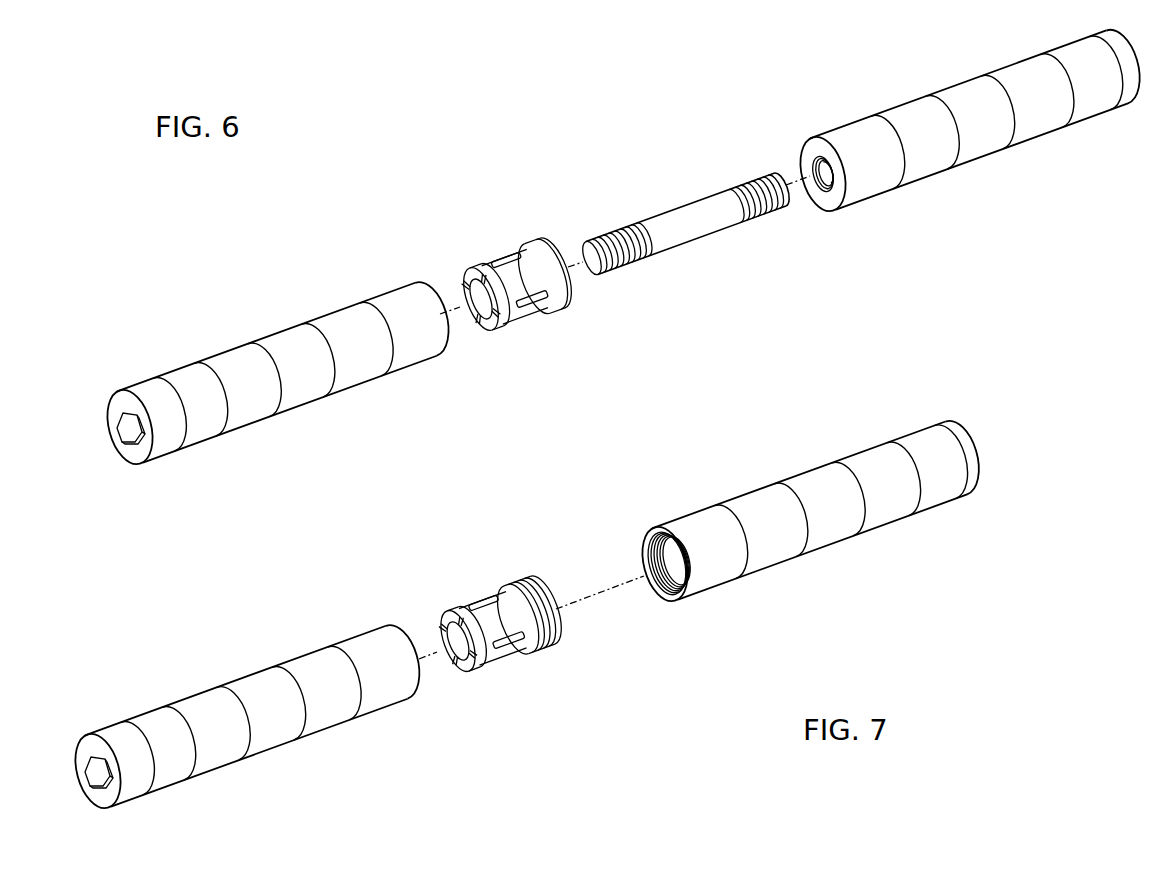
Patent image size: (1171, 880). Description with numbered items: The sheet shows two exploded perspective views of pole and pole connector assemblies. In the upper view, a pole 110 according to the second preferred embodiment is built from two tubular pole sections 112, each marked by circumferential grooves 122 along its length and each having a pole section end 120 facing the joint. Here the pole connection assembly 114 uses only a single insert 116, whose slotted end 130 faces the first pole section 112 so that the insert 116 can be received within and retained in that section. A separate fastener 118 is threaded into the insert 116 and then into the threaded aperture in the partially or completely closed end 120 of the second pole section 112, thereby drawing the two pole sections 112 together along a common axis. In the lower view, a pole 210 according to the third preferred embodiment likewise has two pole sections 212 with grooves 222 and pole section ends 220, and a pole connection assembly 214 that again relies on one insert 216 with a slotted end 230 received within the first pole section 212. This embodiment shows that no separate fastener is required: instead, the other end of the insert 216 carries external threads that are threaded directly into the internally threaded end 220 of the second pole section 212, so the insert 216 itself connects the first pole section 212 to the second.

In FIG. 6, the pole 110 is at (470, 140).
In FIG. 6, the pole section 112 is at (302, 395).
In FIG. 6, the pole connection assembly 114 is at (615, 263).
In FIG. 6, the insert 116 is at (512, 270).
In FIG. 6, the fastener 118 is at (660, 212).
In FIG. 6, the pole section end 120 is at (437, 352).
In FIG. 6, the grooves 122 is at (990, 74).
In FIG. 6, the slotted end of insert 130 is at (514, 282).
In FIG. 7, the pole 210 is at (387, 547).
In FIG. 7, the pole section 212 is at (275, 730).
In FIG. 7, the pole connection assembly 214 is at (580, 645).
In FIG. 7, the insert 216 is at (500, 617).
In FIG. 7, the pole section end 220 is at (403, 688).
In FIG. 7, the grooves 222 is at (827, 472).
In FIG. 7, the slotted end of insert 230 is at (491, 628).